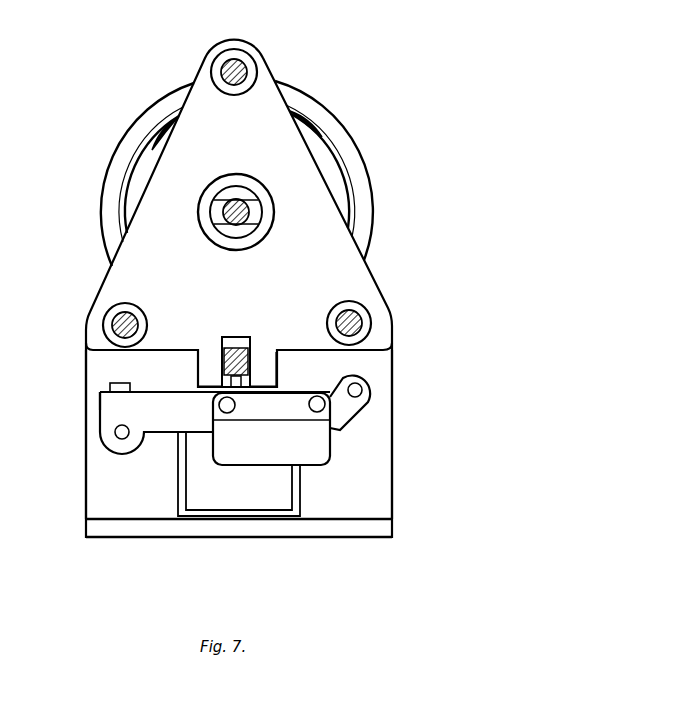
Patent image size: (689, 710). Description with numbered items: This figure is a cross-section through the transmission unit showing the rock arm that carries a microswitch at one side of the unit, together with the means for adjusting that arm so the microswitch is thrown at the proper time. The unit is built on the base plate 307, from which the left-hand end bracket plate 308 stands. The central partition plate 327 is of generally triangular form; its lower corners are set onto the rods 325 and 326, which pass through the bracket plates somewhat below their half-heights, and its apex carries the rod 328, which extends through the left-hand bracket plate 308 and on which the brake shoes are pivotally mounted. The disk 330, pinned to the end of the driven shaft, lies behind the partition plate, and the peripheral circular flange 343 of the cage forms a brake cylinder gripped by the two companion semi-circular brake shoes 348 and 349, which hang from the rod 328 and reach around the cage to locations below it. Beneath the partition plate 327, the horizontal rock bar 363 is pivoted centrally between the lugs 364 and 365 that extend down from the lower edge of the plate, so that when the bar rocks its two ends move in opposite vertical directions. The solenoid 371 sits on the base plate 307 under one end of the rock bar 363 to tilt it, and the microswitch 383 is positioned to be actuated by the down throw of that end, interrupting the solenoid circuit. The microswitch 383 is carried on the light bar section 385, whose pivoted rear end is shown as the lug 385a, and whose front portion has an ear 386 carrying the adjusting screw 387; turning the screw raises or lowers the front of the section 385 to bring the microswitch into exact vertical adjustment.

The base plate 307 is at (383, 528).
The left-hand end bracket plate 308 is at (368, 471).
The rod 325 is at (364, 323).
The rod 326 is at (110, 327).
The central partition plate 327 is at (342, 273).
The rod 328 is at (248, 70).
The disk 330 is at (318, 167).
The peripheral circular flange 343 is at (320, 148).
The brake shoe 348 is at (110, 201).
The brake shoe 349 is at (360, 210).
The rock bar 363 is at (236, 337).
The lug 364 is at (212, 369).
The lug 365 is at (262, 369).
The solenoid 371 is at (240, 503).
The microswitch 383 is at (271, 429).
The bar section 385 is at (215, 423).
The arm lug 385a is at (362, 390).
The ear 386 is at (100, 393).
The adjusting screw 387 is at (97, 385).